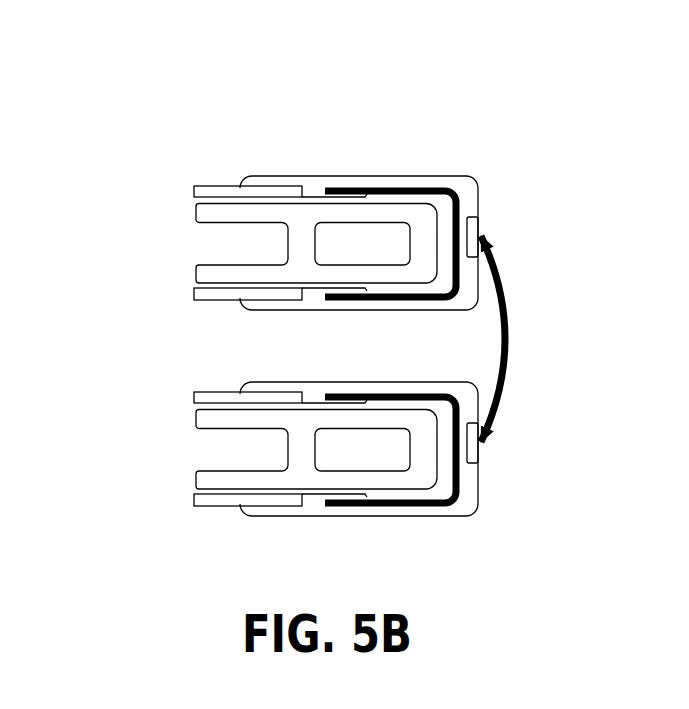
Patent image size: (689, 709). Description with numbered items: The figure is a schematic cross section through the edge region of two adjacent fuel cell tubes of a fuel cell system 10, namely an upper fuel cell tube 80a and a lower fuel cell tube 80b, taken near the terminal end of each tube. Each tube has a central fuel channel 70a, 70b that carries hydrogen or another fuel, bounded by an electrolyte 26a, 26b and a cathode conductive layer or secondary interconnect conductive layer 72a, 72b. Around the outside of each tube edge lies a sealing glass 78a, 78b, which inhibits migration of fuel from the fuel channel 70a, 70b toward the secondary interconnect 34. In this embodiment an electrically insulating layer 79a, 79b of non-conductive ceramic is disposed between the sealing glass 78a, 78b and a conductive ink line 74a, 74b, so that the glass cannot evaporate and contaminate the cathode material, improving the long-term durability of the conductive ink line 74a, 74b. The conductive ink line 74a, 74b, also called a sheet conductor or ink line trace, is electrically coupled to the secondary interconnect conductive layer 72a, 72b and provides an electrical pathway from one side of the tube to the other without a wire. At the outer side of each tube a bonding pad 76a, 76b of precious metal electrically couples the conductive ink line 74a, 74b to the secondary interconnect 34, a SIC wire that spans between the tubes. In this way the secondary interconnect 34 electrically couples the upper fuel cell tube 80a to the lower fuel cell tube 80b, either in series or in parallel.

The connector assembly 10 is at (358, 74).
The electrolyte 26a is at (216, 286).
The electrolyte 26b is at (216, 492).
The secondary interconnect 34 is at (512, 365).
The fuel channel 70a is at (211, 228).
The fuel channel 70b is at (211, 434).
The secondary interconnect conductive layer 72a is at (205, 184).
The secondary interconnect conductive layer 72b is at (205, 390).
The conductive ink line 74a is at (438, 175).
The conductive ink line 74b is at (328, 381).
The bonding pad 76a is at (481, 223).
The bonding pad 76b is at (484, 464).
The sealing glass 78a is at (424, 287).
The sealing glass 78b is at (424, 493).
The insulating layer 79a is at (392, 301).
The insulating layer 79b is at (392, 507).
The upper fuel cell tube 80a is at (84, 176).
The lower fuel cell tube 80b is at (84, 382).